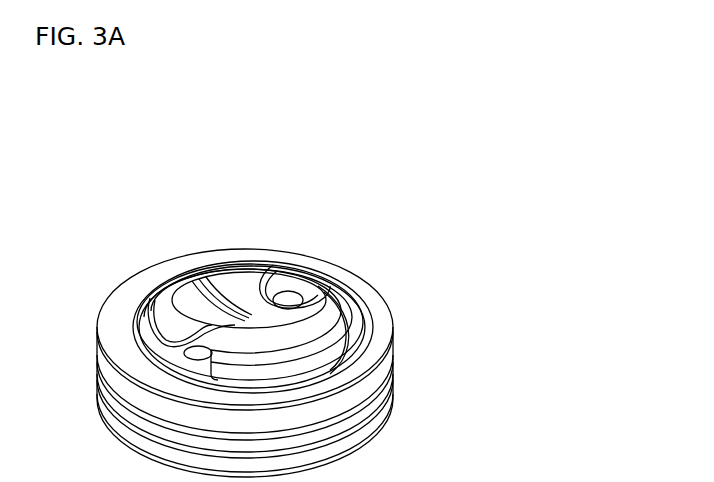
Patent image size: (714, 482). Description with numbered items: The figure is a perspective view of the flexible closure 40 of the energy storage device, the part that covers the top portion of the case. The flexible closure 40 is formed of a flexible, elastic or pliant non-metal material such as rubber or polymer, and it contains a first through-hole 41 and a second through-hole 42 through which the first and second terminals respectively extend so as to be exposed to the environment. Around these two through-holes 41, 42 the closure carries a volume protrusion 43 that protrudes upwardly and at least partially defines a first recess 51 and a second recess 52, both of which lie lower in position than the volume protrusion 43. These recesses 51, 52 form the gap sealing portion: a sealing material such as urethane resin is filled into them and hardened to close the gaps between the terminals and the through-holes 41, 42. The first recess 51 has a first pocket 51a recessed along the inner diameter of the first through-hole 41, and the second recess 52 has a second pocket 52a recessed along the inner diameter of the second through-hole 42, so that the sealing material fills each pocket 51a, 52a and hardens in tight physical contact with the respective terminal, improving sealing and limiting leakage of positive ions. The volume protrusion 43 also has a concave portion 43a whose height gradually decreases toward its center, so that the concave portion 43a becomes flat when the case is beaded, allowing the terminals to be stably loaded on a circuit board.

The flexible closure 40 is at (443, 340).
The first through-hole 41 is at (288, 296).
The second through-hole 42 is at (112, 340).
The volume protrusion 43 is at (393, 400).
The concave portion 43a is at (252, 325).
The first recess 51 is at (327, 283).
The first pocket 51a is at (307, 283).
The second recess 52 is at (195, 370).
The second pocket 52a is at (150, 312).